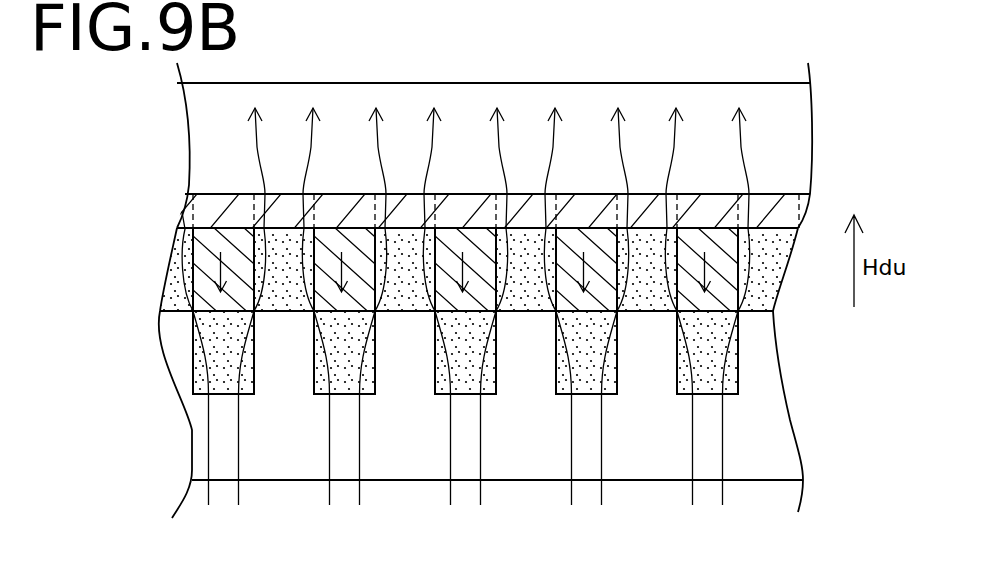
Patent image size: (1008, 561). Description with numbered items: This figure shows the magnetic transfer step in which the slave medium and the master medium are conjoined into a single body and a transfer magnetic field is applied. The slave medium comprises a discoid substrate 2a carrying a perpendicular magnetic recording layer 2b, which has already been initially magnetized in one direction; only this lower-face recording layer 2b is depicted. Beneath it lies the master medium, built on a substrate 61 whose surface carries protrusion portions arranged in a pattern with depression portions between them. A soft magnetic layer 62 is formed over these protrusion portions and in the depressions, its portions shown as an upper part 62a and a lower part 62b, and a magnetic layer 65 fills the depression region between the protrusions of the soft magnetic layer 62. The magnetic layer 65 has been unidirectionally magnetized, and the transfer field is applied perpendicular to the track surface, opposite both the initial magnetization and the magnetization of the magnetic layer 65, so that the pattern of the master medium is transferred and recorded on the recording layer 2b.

The discoid substrate 2a is at (203, 135).
The magnetic recording layer 2b is at (187, 212).
The substrate 61 is at (200, 408).
The soft magnetic layer 62 is at (429, 343).
The upper magnetic layer portion 62a is at (177, 298).
The lower magnetic layer portion 62b is at (197, 355).
The magnetic layer 65 is at (205, 258).